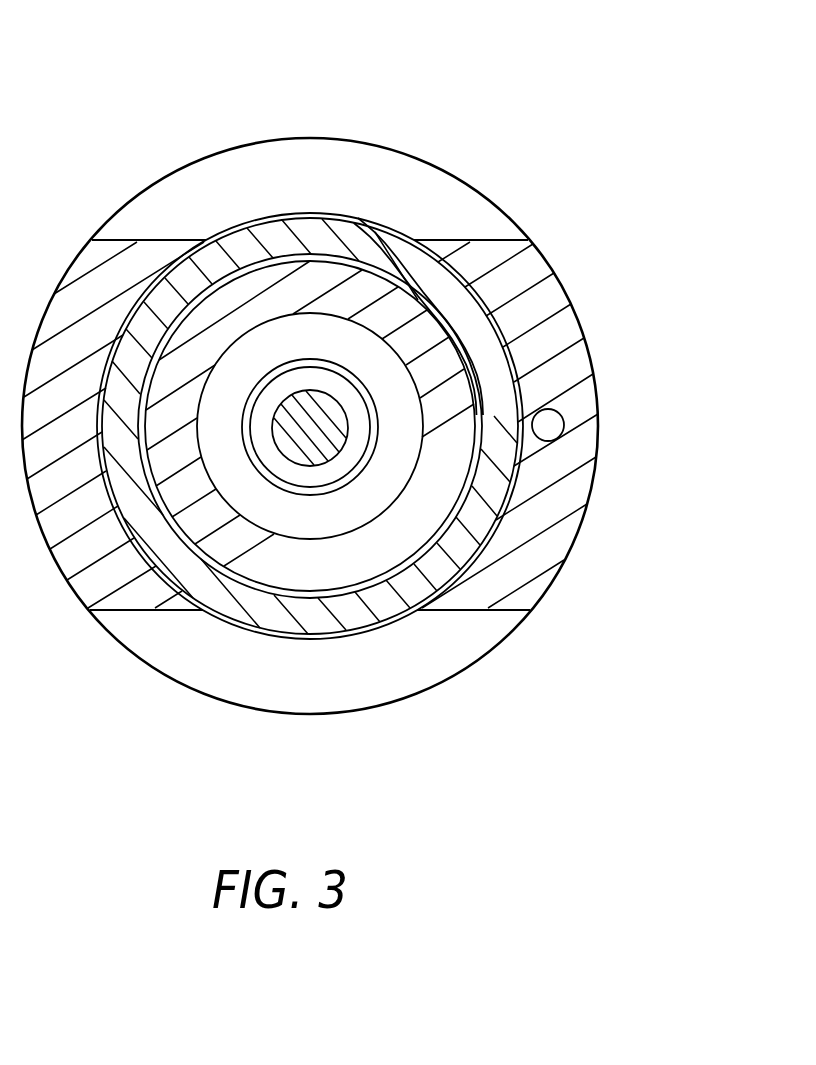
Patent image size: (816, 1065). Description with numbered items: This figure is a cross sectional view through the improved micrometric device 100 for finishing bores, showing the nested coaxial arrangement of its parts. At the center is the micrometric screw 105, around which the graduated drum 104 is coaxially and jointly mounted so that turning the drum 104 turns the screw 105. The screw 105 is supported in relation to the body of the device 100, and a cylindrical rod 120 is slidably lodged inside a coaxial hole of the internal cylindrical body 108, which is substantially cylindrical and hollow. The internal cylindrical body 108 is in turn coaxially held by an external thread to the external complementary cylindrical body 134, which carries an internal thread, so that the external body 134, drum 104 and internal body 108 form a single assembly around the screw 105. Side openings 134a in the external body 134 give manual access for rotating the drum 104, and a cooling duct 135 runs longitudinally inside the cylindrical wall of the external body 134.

The micrometric device 100 is at (365, 88).
The graduated drum 104 is at (470, 317).
The micrometric screw 105 is at (297, 407).
The internal cylindrical body 108 is at (413, 532).
The cylindrical rod 120 is at (233, 492).
The external complementary cylindrical body 134 is at (582, 372).
The side openings 134a is at (457, 191).
The cooling duct 135 is at (550, 427).